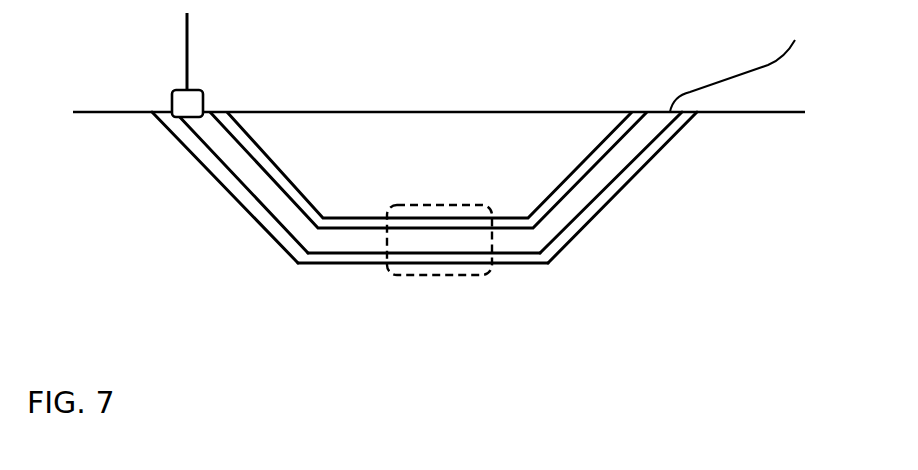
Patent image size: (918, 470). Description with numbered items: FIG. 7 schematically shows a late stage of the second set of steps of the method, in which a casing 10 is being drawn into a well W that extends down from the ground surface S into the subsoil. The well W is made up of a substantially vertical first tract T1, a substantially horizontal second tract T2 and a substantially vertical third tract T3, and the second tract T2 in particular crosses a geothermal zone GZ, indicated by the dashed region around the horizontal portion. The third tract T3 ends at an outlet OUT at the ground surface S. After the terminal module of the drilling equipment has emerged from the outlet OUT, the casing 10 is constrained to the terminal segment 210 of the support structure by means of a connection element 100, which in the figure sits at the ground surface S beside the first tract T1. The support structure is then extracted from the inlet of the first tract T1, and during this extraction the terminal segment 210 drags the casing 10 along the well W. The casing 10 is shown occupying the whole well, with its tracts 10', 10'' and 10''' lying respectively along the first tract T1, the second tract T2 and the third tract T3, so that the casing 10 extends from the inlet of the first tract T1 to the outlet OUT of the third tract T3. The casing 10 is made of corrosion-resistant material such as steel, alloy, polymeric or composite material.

The ground surface S is at (100, 112).
The terminal segment 210 is at (160, 52).
The connection element 100 is at (203, 97).
The casing 10 is at (427, 249).
The tract of the casing 10' is at (230, 218).
The tract of the casing 10'' is at (423, 319).
The tract of the casing 10''' is at (621, 187).
The first tract T1 is at (178, 143).
The second tract T2 is at (343, 217).
The third tract T3 is at (607, 212).
The well W is at (563, 254).
The geothermal zone GZ is at (428, 281).
The outlet OUT is at (746, 61).